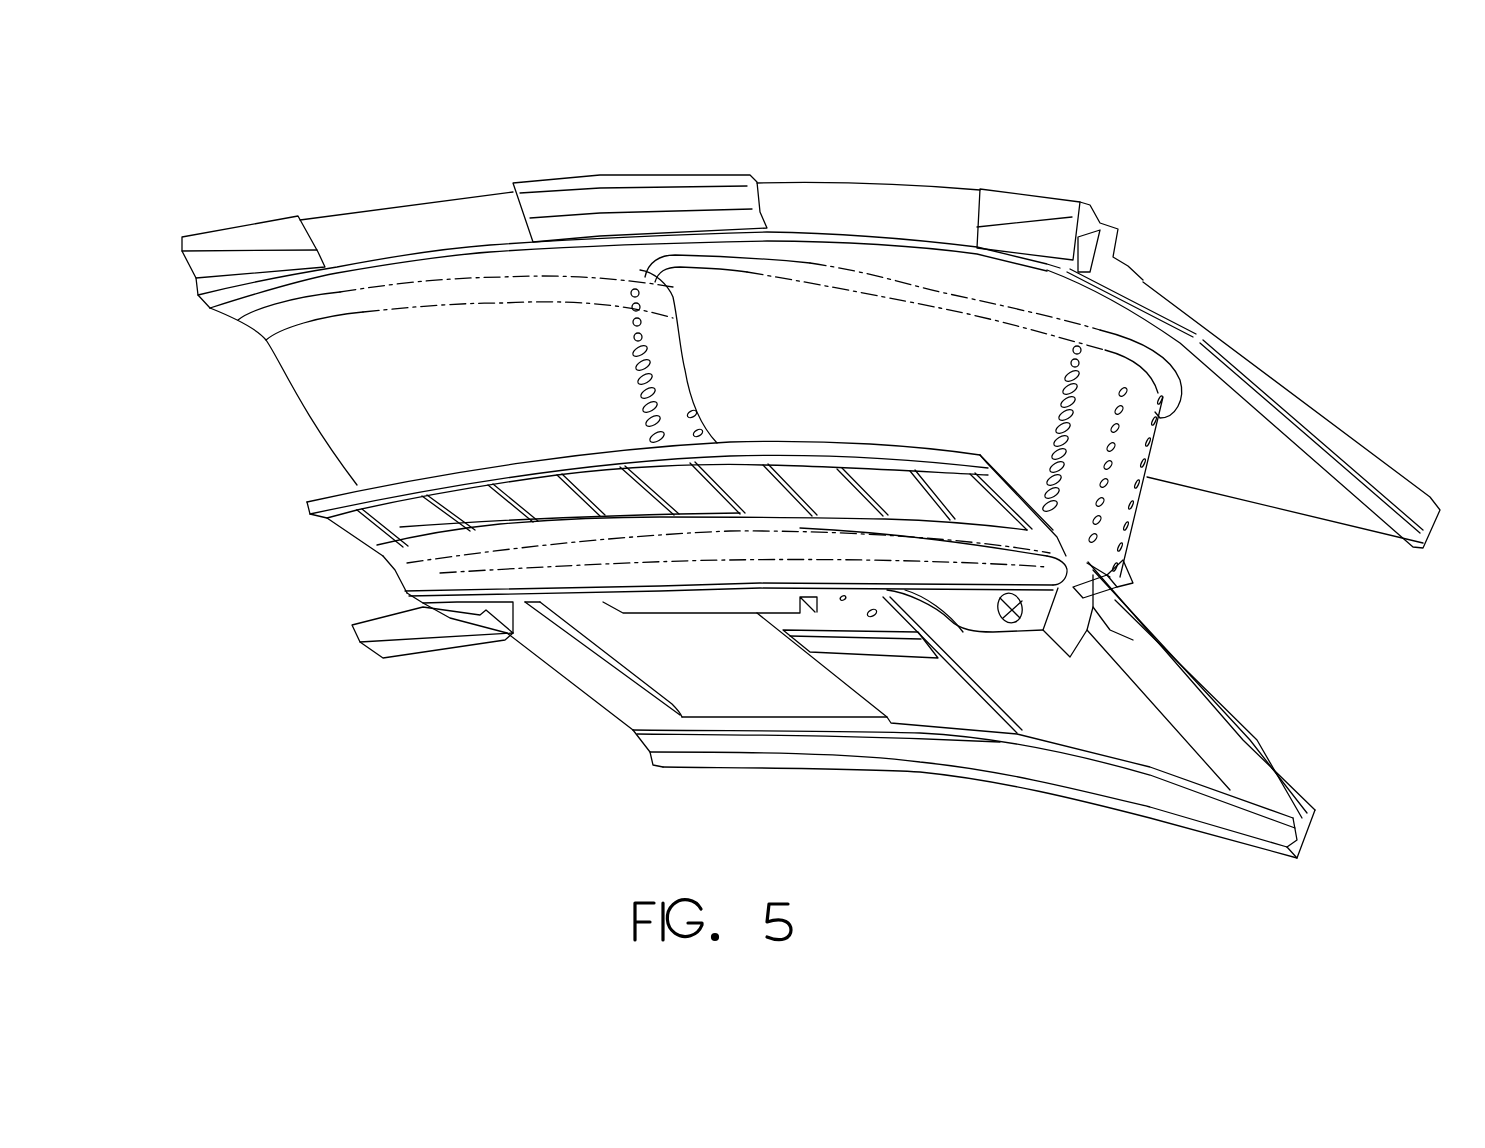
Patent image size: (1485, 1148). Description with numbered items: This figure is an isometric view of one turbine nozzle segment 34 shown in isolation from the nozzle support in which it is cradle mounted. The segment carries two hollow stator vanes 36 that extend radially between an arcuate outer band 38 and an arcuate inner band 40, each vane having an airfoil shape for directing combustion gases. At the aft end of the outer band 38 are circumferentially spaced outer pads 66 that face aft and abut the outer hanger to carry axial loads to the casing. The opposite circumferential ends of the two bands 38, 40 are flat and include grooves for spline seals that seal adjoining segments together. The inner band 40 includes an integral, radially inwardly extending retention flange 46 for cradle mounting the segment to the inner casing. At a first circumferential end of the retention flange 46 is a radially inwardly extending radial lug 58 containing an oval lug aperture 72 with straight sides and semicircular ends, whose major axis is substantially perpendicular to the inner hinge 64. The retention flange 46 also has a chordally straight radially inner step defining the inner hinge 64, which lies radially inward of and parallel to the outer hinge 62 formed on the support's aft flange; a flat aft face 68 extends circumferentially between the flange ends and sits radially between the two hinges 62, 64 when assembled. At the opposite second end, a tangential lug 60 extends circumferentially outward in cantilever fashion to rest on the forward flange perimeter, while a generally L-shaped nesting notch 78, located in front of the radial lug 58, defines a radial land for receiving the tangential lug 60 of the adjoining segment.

The nozzle segment 34 is at (1158, 292).
The stator vane 36 is at (474, 393).
The outer band 38 is at (1289, 404).
The inner band 40 is at (1268, 754).
The retention flange 46 is at (692, 588).
The radial lug 58 is at (1068, 636).
The tangential lug 60 is at (365, 615).
The outer hinge 62 is at (718, 578).
The inner hinge 64 is at (715, 597).
The outer pad 66 is at (216, 240).
The flat aft face 68 is at (568, 583).
The lug aperture 72 is at (1000, 614).
The nesting notch 78 is at (1107, 632).